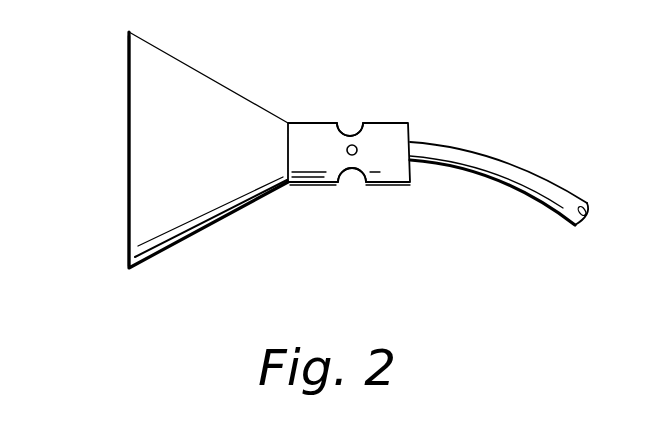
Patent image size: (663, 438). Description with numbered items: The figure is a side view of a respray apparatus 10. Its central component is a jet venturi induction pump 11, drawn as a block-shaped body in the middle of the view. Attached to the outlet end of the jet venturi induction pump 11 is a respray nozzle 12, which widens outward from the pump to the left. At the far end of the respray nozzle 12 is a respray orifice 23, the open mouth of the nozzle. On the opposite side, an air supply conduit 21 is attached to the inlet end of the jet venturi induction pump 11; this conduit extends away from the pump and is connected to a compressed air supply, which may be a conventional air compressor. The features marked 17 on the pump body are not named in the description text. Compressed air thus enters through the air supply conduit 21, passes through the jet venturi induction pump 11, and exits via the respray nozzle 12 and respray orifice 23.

The respray apparatus 10 is at (274, 218).
The jet venturi induction pump 11 is at (317, 124).
The respray nozzle 12 is at (224, 85).
The notches and aperture 17 is at (353, 136).
The air supply conduit 21 is at (498, 182).
The respray orifice 23 is at (129, 114).